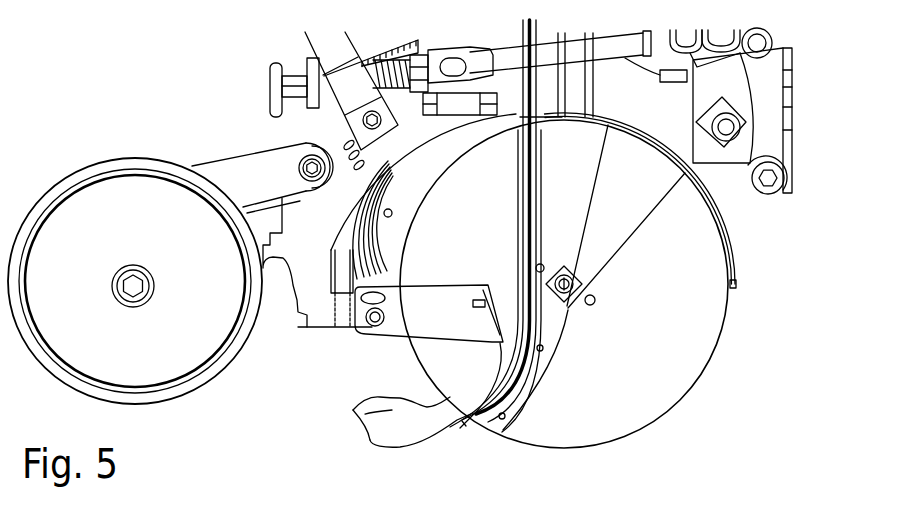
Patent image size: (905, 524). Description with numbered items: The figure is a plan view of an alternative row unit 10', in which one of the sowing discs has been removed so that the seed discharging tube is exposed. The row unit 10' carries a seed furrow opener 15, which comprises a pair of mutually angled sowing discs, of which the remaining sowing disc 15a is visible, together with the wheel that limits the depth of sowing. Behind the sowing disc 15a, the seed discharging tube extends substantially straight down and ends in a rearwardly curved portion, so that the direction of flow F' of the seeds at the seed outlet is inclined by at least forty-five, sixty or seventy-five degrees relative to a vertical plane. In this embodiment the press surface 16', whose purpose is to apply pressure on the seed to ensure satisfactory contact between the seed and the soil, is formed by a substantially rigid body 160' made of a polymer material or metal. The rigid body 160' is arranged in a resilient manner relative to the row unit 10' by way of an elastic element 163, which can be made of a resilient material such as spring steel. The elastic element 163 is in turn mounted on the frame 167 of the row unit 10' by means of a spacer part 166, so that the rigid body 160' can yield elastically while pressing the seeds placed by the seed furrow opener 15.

The row unit 10' is at (400, 216).
The seed furrow opener 15 is at (702, 436).
The sowing disc 15a is at (703, 339).
The press surface 16' is at (421, 445).
The rigid body 160' is at (364, 418).
The elastic element 163 is at (497, 378).
The spacer part 166 is at (400, 328).
The frame 167 is at (300, 315).
The direction of flow F' is at (462, 439).